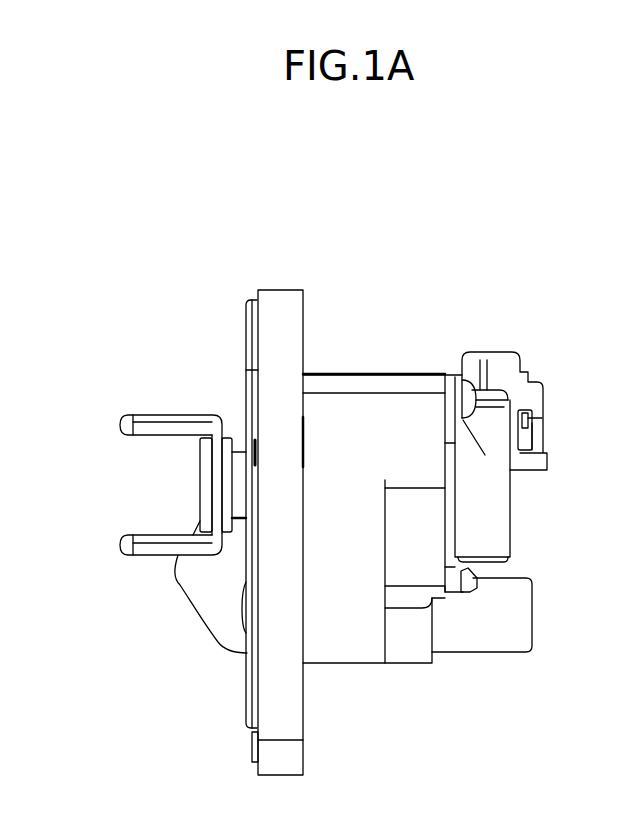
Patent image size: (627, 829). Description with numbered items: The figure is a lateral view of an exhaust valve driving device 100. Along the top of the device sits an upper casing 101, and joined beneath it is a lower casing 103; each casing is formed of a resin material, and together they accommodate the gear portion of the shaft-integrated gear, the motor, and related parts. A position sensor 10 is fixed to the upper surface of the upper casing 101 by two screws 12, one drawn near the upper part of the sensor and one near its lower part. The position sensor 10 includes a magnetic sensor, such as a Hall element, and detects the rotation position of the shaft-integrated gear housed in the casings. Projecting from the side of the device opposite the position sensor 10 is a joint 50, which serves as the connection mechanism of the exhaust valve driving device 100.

The exhaust valve driving device 100 is at (142, 233).
The joint 50 is at (163, 413).
The upper casing 101 is at (360, 407).
The lower casing 103 is at (213, 612).
The position sensor 10 is at (495, 513).
The screws 12 is at (468, 383).